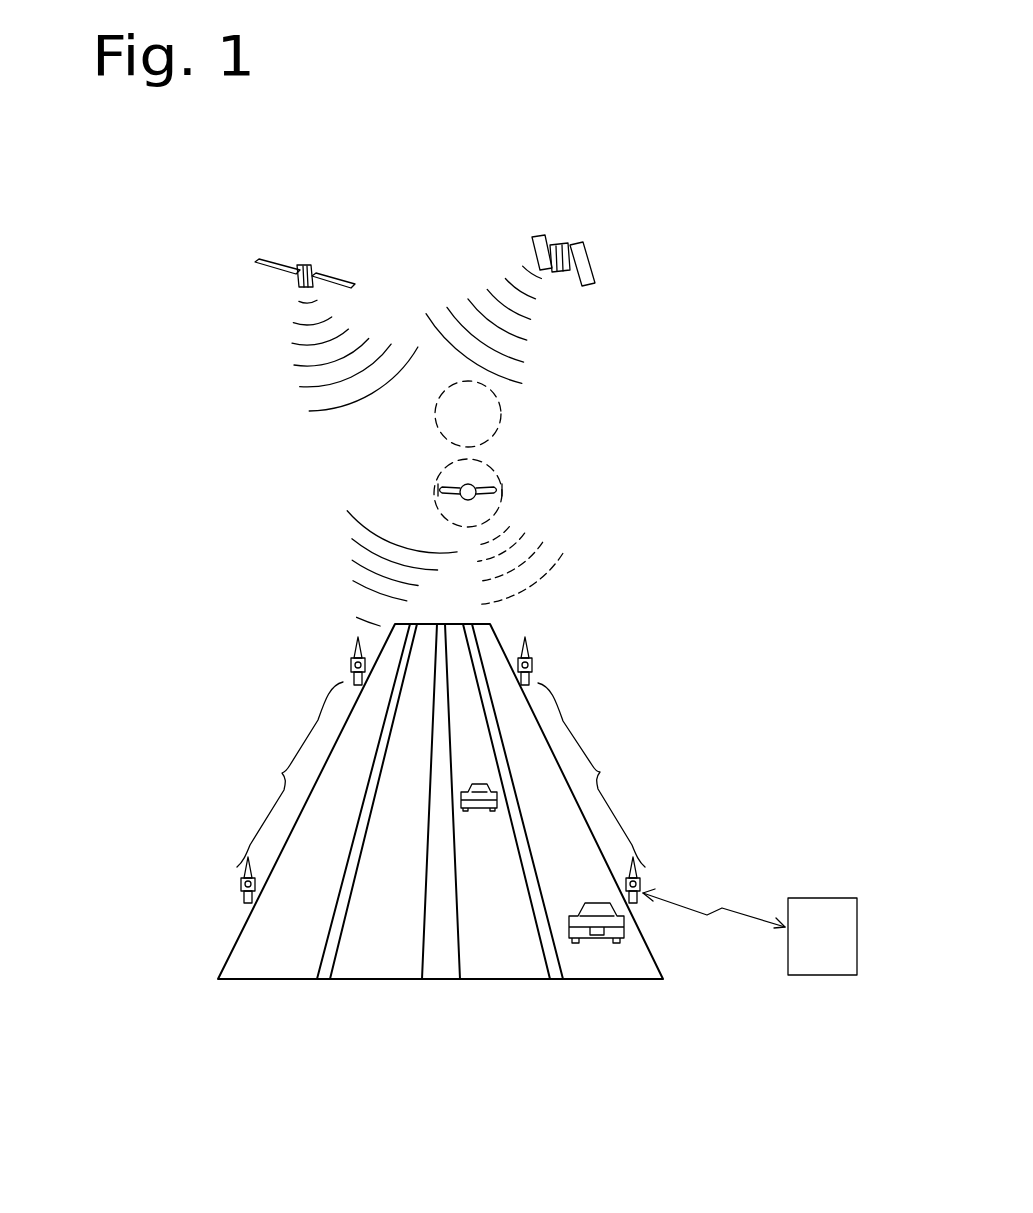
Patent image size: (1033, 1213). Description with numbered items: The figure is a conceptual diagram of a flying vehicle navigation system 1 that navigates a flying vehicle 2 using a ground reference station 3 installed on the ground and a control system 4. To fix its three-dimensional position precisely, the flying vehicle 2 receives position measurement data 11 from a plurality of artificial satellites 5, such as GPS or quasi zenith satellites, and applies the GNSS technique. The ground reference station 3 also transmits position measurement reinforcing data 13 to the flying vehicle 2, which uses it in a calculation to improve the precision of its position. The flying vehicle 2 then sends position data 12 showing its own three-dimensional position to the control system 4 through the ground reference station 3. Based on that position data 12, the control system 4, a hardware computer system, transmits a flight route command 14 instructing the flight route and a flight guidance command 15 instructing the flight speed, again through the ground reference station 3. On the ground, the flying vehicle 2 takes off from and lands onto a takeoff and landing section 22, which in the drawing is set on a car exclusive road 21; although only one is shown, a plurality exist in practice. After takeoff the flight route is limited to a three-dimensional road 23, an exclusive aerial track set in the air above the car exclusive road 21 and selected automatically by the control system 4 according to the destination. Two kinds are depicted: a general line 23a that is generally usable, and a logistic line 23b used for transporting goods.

The flying vehicle navigation system 1 is at (191, 240).
The flying vehicle 2 is at (438, 487).
The ground reference station 3 is at (350, 662).
The control system 4 is at (757, 911).
The artificial satellite 5 is at (608, 213).
The position measurement data 11 is at (528, 325).
The position data 12 is at (548, 565).
The position measurement reinforcing data 13 is at (353, 547).
The flight route command 14 is at (353, 566).
The flight guidance command 15 is at (353, 593).
The car exclusive road 21 is at (310, 980).
The takeoff and landing section 22 is at (370, 774).
The three-dimensional road 23 is at (790, 400).
The general line 23a is at (503, 492).
The logistic line 23b is at (502, 410).